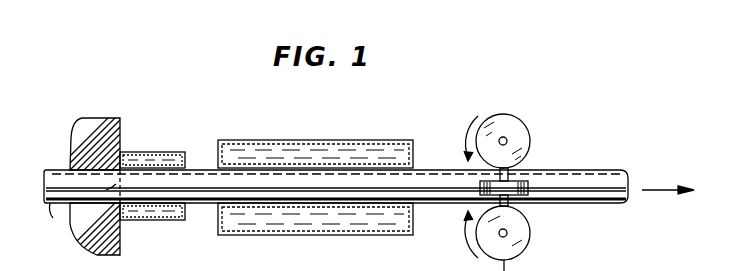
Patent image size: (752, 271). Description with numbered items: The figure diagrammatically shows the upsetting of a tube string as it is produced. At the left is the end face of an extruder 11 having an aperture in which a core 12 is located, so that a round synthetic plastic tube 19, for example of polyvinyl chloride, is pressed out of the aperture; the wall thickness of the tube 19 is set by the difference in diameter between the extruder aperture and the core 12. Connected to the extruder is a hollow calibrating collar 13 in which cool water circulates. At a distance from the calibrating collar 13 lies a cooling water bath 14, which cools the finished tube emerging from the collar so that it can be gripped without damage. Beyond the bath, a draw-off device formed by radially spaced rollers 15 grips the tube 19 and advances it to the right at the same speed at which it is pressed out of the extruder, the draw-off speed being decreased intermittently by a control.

The extruder 11 is at (95, 130).
The core 12 is at (71, 237).
The calibrating collar 13 is at (158, 158).
The cooling water bath 14 is at (315, 152).
The rollers 15 is at (528, 181).
The synthetic plastic tube 19 is at (442, 193).